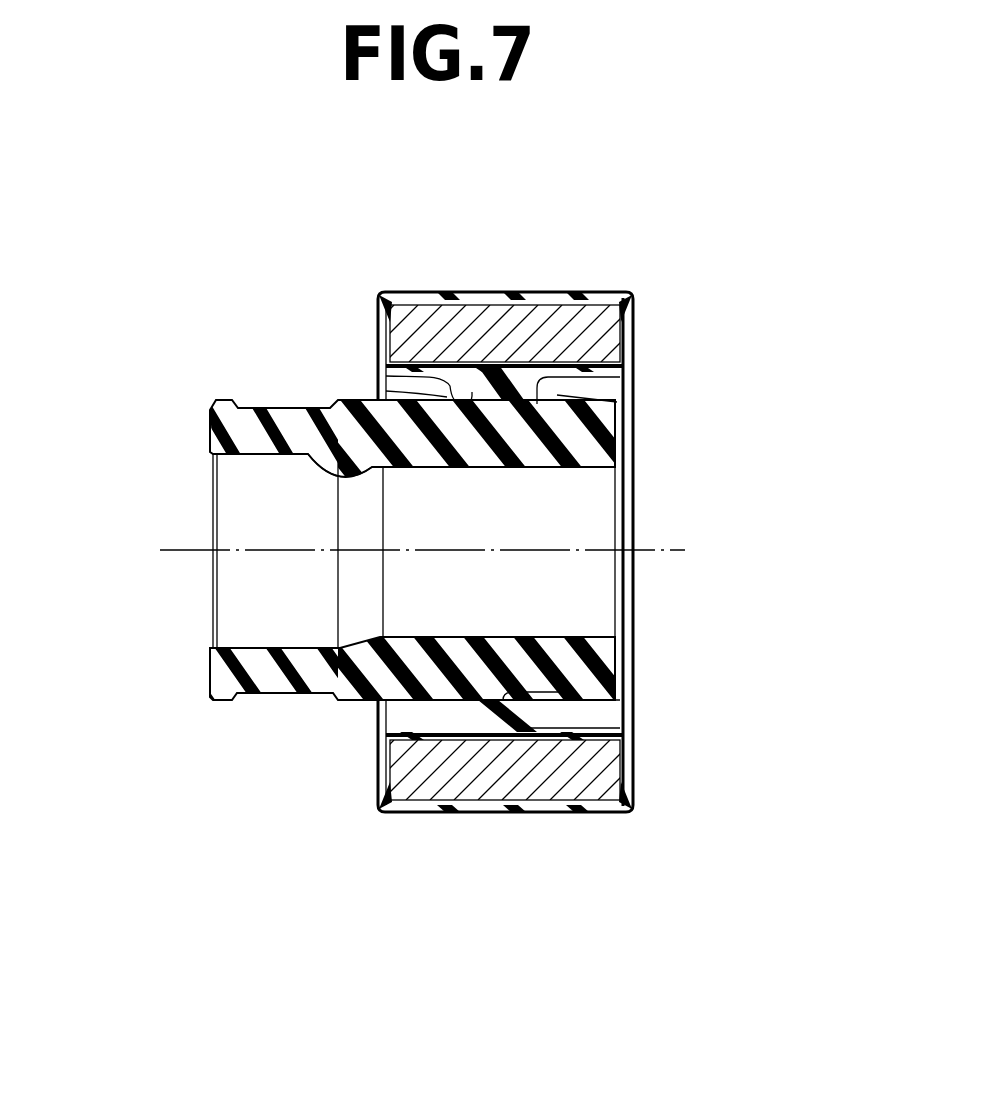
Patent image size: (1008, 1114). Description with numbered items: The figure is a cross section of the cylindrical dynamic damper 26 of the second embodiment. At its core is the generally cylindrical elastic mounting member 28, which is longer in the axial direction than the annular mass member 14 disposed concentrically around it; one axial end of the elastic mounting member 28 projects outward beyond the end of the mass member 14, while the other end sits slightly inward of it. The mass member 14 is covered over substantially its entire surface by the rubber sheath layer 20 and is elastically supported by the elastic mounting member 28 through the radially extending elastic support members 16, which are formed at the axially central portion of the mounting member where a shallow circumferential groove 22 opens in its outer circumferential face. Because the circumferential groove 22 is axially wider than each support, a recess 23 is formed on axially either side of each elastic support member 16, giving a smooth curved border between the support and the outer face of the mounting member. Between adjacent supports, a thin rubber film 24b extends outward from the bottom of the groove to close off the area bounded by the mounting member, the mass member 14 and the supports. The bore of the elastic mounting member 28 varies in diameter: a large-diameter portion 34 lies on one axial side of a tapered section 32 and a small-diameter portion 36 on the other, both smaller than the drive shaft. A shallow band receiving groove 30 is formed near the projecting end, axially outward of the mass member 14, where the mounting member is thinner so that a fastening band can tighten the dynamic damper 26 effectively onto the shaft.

The mass member 14 is at (512, 330).
The elastic support members 16 is at (624, 350).
The rubber sheath layer 20 is at (567, 807).
The circumferential groove 22 is at (505, 712).
The recess 23 is at (385, 380).
The thin rubber film 24b is at (471, 708).
The dynamic damper 26 is at (731, 227).
The elastic mounting member 28 is at (112, 572).
The band receiving groove 30 is at (238, 703).
The tapered section 32 is at (313, 468).
The large-diameter portion 34 is at (265, 648).
The small-diameter portion 36 is at (472, 657).